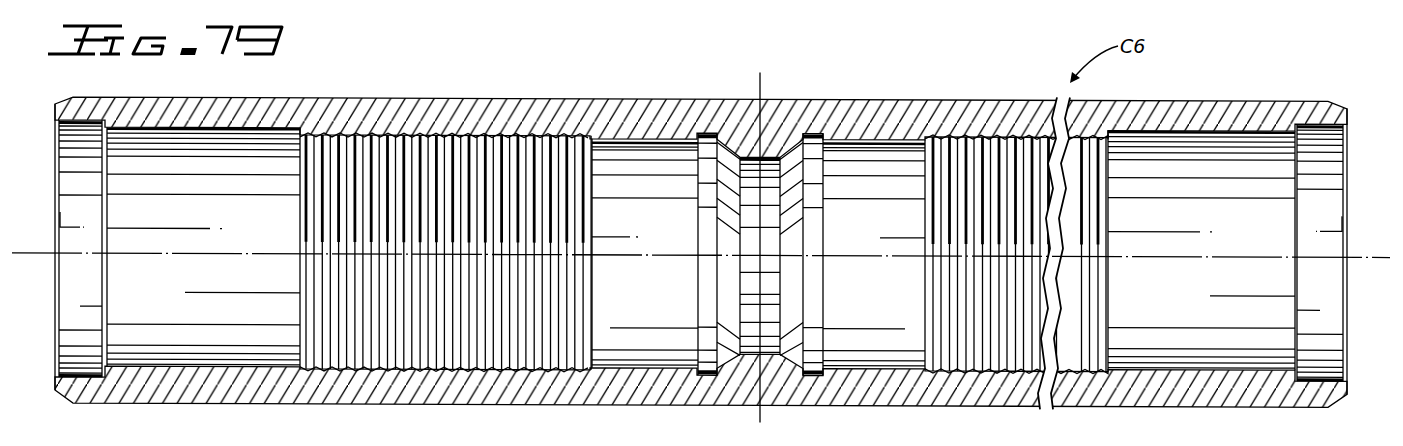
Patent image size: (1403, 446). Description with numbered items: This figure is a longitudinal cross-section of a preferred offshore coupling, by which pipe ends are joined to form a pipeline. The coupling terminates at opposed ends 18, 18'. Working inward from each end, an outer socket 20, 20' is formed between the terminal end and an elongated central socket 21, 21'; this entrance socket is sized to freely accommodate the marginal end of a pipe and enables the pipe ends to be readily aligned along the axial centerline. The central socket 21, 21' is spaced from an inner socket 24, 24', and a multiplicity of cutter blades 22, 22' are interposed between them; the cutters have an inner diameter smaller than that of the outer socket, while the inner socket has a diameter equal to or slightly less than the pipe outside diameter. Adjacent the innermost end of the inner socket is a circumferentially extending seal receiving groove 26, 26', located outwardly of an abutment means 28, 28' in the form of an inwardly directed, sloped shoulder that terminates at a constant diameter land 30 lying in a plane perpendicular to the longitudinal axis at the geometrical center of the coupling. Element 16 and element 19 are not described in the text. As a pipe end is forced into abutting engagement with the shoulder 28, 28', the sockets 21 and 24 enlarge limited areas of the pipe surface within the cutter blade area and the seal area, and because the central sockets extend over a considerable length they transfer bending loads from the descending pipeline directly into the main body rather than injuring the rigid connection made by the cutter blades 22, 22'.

The pipe coupling 19 is at (436, 80).
The terminal end 18 is at (1344, 252).
The terminal end 18' is at (62, 248).
The outer socket 20 is at (1350, 209).
The entrance socket 20' is at (52, 211).
The central socket 21 is at (1201, 251).
The central socket 21' is at (203, 247).
The cutter blades 22 is at (1043, 254).
The cutter blades 22' is at (416, 252).
The inner socket 24 is at (874, 254).
The inner socket 24' is at (645, 253).
The seal receiving groove 26 is at (838, 326).
The seal receiving groove 26' is at (686, 326).
The abutment means 28 is at (826, 254).
The abutment means 28' is at (687, 254).
The beveled face 16 is at (795, 182).
The land 30 is at (770, 222).